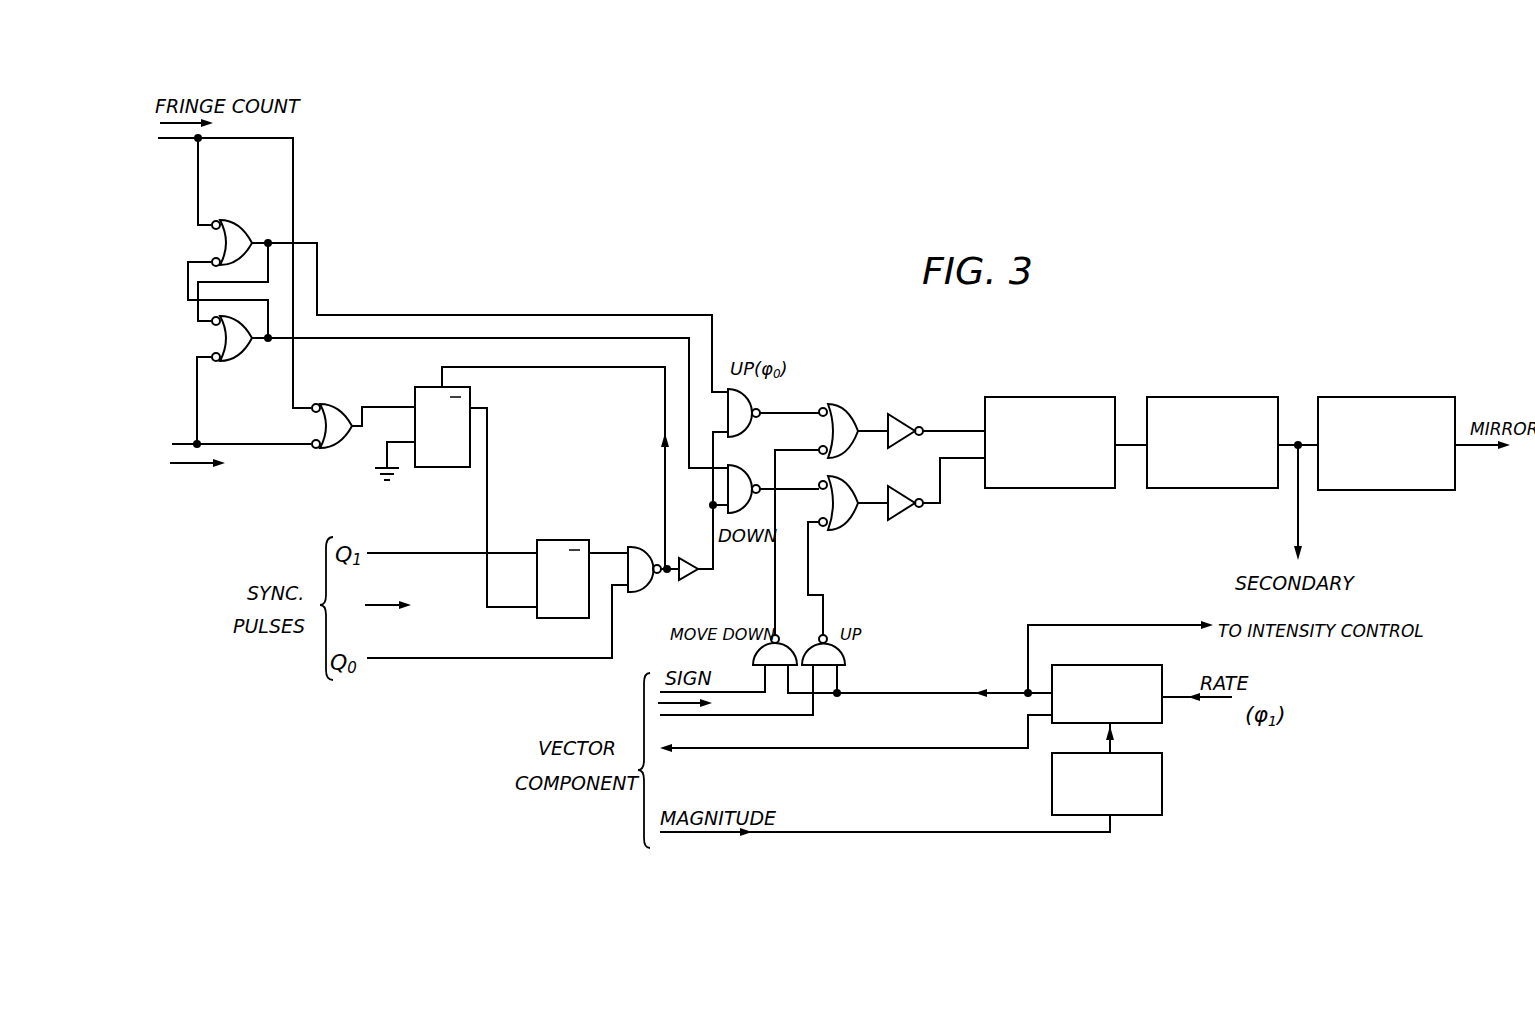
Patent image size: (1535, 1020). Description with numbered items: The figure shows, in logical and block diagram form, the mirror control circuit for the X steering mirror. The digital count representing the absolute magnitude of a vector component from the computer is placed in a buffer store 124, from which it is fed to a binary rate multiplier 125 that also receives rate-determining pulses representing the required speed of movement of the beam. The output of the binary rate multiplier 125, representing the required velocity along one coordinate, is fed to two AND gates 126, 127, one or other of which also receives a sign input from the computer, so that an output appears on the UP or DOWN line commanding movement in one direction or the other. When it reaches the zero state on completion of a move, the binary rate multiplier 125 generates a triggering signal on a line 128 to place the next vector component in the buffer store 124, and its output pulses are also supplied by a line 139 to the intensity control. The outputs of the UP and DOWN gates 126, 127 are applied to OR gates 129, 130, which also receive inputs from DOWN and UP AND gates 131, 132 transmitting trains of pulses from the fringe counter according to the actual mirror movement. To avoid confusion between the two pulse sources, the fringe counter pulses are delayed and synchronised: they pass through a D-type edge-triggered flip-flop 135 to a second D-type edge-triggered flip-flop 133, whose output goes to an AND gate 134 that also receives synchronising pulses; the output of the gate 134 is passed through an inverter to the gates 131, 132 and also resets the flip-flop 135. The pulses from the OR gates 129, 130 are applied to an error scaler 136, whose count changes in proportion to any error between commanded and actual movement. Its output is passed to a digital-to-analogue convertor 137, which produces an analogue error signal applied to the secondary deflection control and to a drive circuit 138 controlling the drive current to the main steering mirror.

The buffer store 124 is at (1160, 762).
The binary rate multiplier 125 is at (1118, 670).
The UP AND gate 126 is at (835, 657).
The DOWN AND gate 127 is at (783, 650).
The line 128 is at (778, 748).
The OR gate 129 is at (840, 510).
The OR gate 130 is at (845, 410).
The DOWN AND gate 131 is at (730, 485).
The UP AND gate 132 is at (740, 407).
The D-type edge-triggered flip-flop 133 is at (586, 597).
The AND gate 134 is at (640, 547).
The D-type edge-triggered flip-flop 135 is at (452, 470).
The error scaler 136 is at (1060, 395).
The digital-to-analogue convertor 137 is at (1212, 395).
The drive circuit 138 is at (1377, 395).
The line 139 is at (1108, 617).